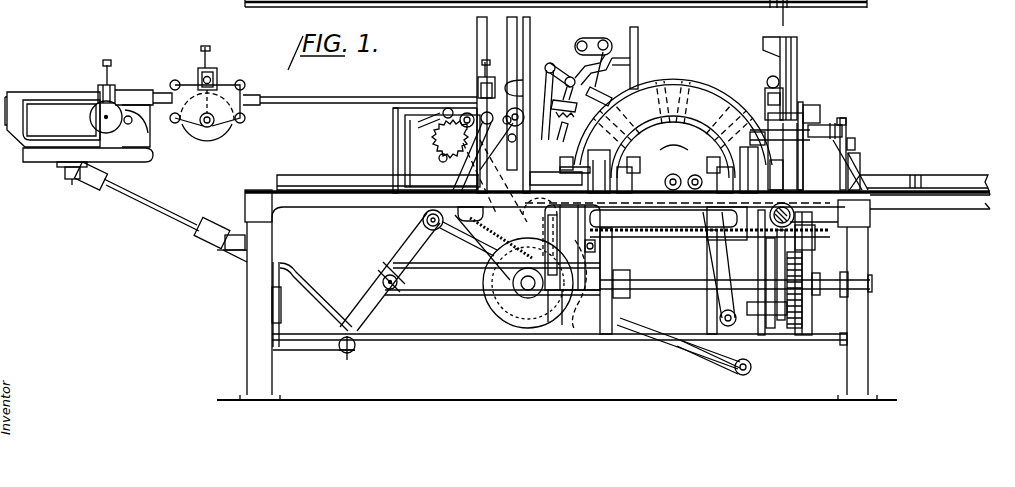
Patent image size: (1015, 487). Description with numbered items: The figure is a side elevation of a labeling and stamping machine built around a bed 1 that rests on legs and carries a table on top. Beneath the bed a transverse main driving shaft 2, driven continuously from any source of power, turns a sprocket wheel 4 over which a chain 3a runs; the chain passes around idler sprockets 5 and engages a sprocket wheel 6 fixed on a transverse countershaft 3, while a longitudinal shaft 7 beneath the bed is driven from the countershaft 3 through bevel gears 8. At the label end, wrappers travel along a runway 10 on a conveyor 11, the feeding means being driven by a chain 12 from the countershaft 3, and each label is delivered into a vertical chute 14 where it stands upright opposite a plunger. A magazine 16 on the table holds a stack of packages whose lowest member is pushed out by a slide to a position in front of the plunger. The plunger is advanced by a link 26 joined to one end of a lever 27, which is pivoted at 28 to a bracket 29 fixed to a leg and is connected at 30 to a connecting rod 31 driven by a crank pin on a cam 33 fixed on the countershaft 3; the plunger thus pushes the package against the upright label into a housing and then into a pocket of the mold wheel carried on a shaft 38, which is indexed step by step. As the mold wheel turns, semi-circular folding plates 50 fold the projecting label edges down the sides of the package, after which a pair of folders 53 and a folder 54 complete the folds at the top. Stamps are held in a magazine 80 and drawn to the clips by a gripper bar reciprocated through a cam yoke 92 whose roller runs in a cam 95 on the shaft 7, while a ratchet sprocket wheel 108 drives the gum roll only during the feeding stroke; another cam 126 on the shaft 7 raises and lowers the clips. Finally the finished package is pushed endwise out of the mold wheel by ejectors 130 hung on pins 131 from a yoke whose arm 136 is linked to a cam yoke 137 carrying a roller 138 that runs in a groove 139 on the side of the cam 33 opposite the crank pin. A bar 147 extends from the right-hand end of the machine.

The bed 1 is at (250, 197).
The main driving shaft 2 is at (790, 212).
The countershaft 3 is at (497, 333).
The chain 3a is at (669, 232).
The sprocket wheel 4 is at (790, 217).
The idler sprockets 5 is at (484, 215).
The sprocket wheel 6 is at (500, 303).
The longitudinal shaft 7 is at (676, 283).
The bevel gears 8 is at (768, 17).
The runway 10 is at (138, 90).
The conveyor 11 is at (420, 128).
The chain 12 is at (493, 228).
The vertical chute 14 is at (523, 150).
The magazine 16 is at (523, 33).
The link 26 is at (460, 217).
The lever 27 is at (418, 231).
The pivot 28 is at (350, 356).
The bracket 29 is at (298, 292).
The pivotal connection 30 is at (383, 278).
The connecting rod 31 is at (425, 280).
The cam 33 is at (513, 320).
The shaft 38 is at (675, 192).
The folding plates 50 is at (715, 90).
The folders 53 is at (613, 77).
The folder 54 is at (540, 110).
The magazine 80 is at (797, 55).
The cam yoke 92 is at (807, 228).
The cam 95 is at (800, 320).
The ratchet sprocket wheel 108 is at (860, 105).
The cam 126 is at (771, 335).
The ejectors 130 is at (694, 176).
The pins 131 is at (670, 178).
The arm 136 is at (713, 355).
The cam yoke 137 is at (637, 333).
The roller 138 is at (570, 322).
The groove 139 is at (547, 320).
The delivery bar 147 is at (890, 183).